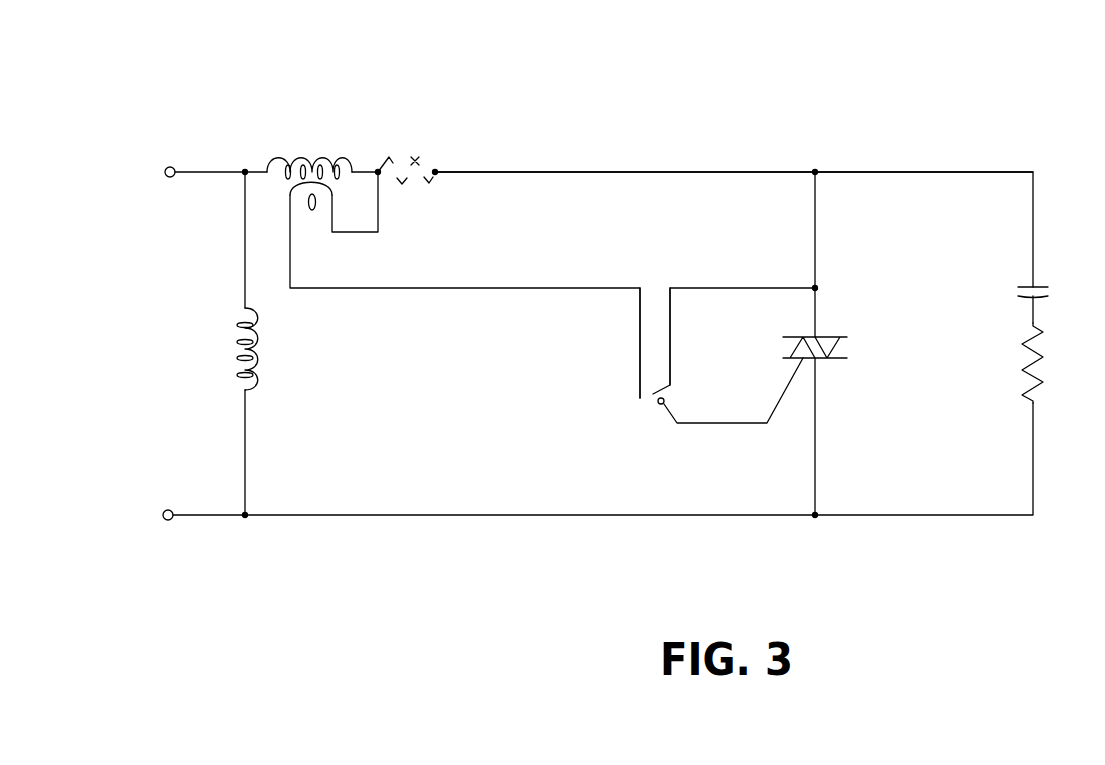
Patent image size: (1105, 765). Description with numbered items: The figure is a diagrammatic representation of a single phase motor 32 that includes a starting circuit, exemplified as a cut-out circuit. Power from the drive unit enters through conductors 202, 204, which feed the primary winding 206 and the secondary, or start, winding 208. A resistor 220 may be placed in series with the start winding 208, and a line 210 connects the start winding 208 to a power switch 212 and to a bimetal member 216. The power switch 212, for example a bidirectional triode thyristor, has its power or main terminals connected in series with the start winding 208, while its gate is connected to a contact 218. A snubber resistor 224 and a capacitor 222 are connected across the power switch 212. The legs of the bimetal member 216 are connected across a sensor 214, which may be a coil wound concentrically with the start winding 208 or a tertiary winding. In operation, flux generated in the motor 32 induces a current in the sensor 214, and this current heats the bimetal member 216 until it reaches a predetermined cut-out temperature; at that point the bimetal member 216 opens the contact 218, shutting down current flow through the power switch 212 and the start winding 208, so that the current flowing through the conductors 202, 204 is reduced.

The motor 32 is at (1012, 108).
The conductor 202 is at (141, 174).
The conductor 204 is at (138, 518).
The primary winding 206 is at (250, 340).
The secondary winding 208 is at (310, 157).
The line 210 is at (647, 173).
The power switch 212 is at (842, 346).
The sensor 214 is at (312, 210).
The bimetal member 216 is at (638, 377).
The contact 218 is at (667, 410).
The resistor 220 is at (415, 165).
The capacitor 222 is at (1040, 287).
The snubber resistor 224 is at (1040, 357).